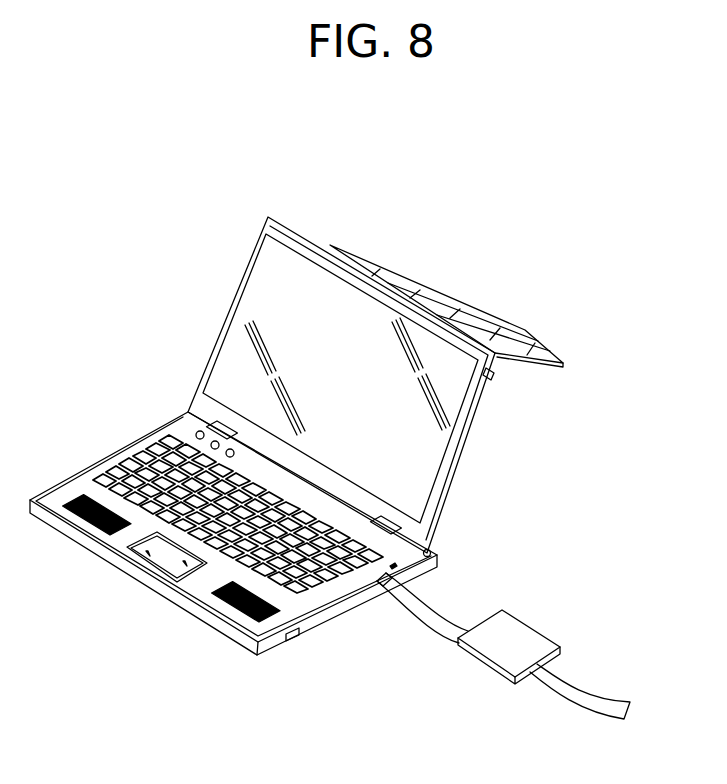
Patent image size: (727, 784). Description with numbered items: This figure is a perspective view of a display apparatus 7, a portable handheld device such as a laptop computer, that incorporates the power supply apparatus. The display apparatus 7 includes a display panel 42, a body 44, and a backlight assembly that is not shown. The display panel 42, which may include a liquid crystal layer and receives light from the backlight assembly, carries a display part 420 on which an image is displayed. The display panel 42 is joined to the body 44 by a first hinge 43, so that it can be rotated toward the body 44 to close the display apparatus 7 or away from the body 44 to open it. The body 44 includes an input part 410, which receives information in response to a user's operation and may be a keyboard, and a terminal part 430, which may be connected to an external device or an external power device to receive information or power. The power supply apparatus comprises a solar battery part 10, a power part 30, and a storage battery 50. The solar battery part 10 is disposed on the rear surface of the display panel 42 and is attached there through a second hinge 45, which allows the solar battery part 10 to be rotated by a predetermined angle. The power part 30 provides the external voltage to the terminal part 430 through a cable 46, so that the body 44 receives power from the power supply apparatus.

The display apparatus 7 is at (446, 268).
The solar battery part 10 is at (522, 343).
The power part 30 is at (531, 637).
The display panel 42 is at (230, 290).
The first hinge 43 is at (431, 554).
The body 44 is at (124, 440).
The second hinge 45 is at (490, 378).
The cable 46 is at (428, 625).
The storage battery 50 is at (296, 641).
The input part 410 is at (120, 470).
The display part 420 is at (280, 263).
The terminal part 430 is at (380, 584).